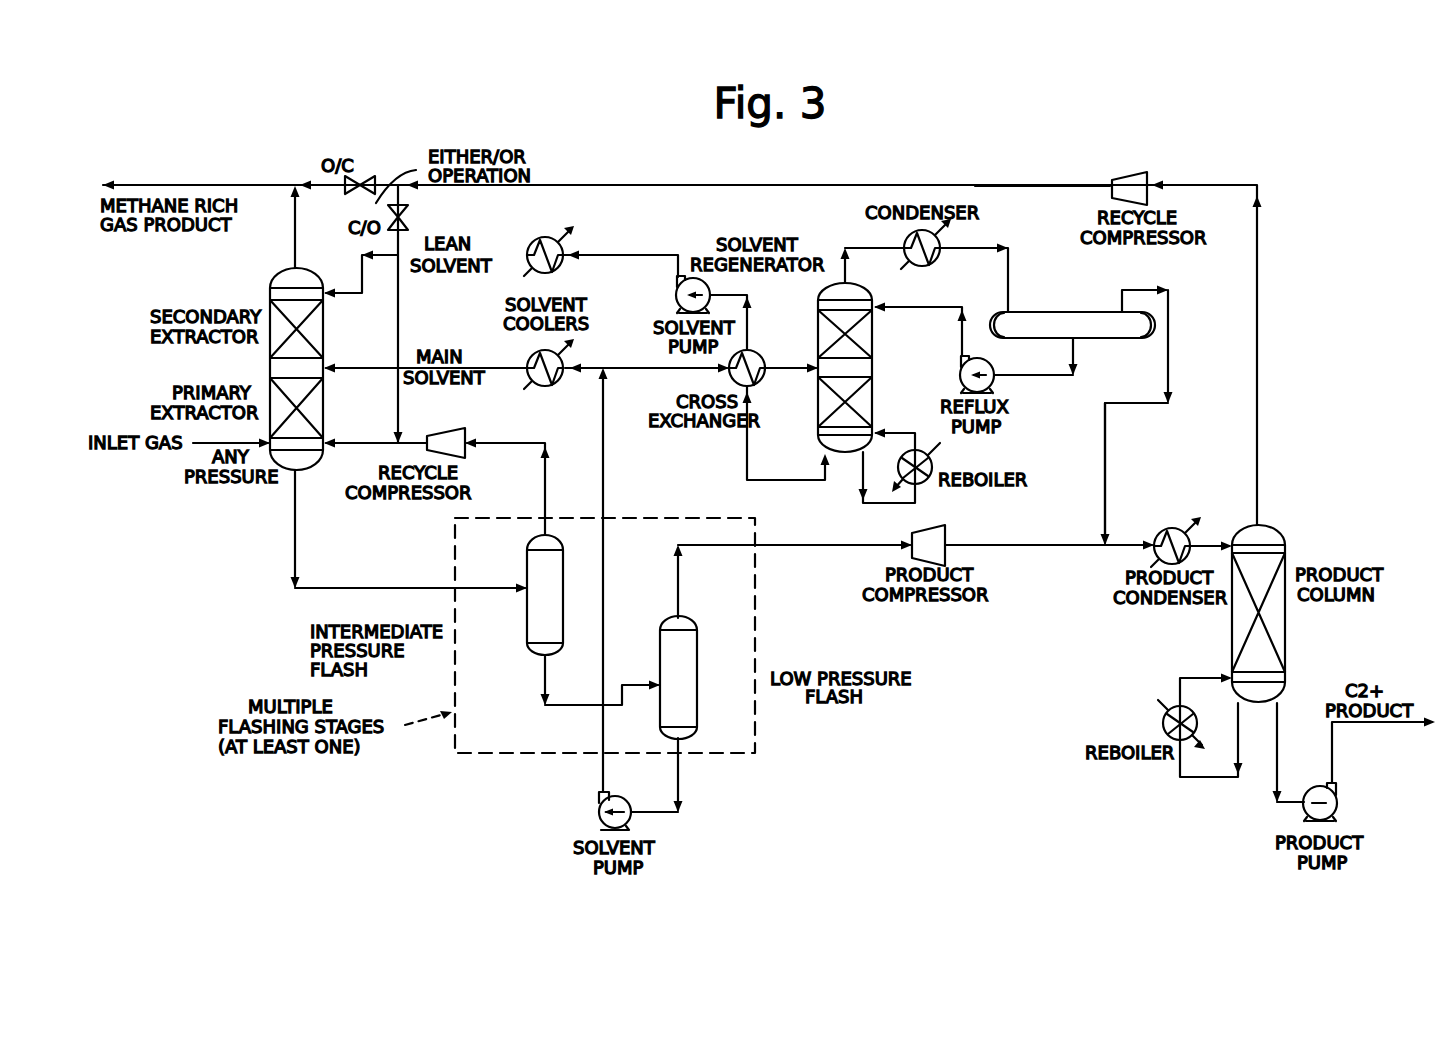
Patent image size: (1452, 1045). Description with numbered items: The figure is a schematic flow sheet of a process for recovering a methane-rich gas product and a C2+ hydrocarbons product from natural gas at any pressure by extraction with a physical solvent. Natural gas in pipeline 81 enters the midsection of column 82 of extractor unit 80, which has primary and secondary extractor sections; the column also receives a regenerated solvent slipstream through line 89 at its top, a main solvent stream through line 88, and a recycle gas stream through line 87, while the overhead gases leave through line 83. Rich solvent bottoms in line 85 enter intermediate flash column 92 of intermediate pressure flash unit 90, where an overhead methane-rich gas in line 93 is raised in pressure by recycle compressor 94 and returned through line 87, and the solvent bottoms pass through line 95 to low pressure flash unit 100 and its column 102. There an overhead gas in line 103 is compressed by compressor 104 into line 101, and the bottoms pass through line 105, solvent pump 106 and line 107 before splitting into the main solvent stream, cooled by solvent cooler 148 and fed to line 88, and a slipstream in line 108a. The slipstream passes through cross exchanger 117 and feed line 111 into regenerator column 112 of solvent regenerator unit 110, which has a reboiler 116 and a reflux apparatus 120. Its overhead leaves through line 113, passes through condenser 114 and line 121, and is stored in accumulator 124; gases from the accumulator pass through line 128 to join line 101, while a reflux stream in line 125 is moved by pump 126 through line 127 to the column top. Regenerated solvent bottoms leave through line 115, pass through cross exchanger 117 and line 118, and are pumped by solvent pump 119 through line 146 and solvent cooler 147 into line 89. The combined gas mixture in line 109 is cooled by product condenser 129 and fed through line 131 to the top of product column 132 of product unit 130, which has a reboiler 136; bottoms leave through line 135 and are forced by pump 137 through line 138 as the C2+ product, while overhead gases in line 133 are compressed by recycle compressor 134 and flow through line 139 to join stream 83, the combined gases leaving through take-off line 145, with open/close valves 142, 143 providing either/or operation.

The extractor unit 80 is at (274, 490).
The pipeline 81 is at (233, 441).
The column 82 is at (270, 370).
The line 83 is at (295, 238).
The line 85 is at (295, 556).
The line 87 is at (384, 441).
The line 88 is at (362, 368).
The line 89 is at (362, 282).
The intermediate pressure flash unit 90 is at (498, 642).
The intermediate flash column 92 is at (563, 596).
The line 93 is at (545, 472).
The recycle compressor 94 is at (427, 448).
The line 95 is at (592, 704).
The low pressure flash unit 100 is at (728, 711).
The line 101 is at (977, 545).
The column 102 is at (697, 640).
The line 103 is at (745, 546).
The compressor 104 is at (912, 536).
The line 105 is at (644, 812).
The solvent pump 106 is at (598, 810).
The line 107 is at (603, 548).
The line 108a is at (699, 373).
The line 109 is at (1122, 545).
The solvent regenerator unit 110 is at (818, 296).
The feed line 111 is at (790, 366).
The regenerator column 112 is at (872, 368).
The line 113 is at (846, 262).
The condenser 114 is at (906, 240).
The line 115 is at (825, 466).
The reboiler 116 is at (938, 460).
The cross exchanger 117 is at (763, 380).
The line 118 is at (747, 330).
The solvent pump 119 is at (677, 296).
The reflux apparatus 120 is at (1039, 286).
The line 121 is at (1008, 282).
The accumulator 124 is at (1098, 312).
The line 125 is at (1068, 352).
The pump 126 is at (962, 372).
The line 127 is at (908, 328).
The line 128 is at (1168, 353).
The product condenser 129 is at (1170, 528).
The product unit 130 is at (1298, 635).
The line 131 is at (1205, 546).
The product column 132 is at (1287, 657).
The line 133 is at (1257, 422).
The recycle compressor 134 is at (1153, 176).
The line 135 is at (1278, 748).
The reboiler 136 is at (1163, 711).
The pump 137 is at (1337, 796).
The line 138 is at (1360, 722).
The line 139 is at (975, 186).
The open/close valve 142 is at (366, 178).
The open/close valve 143 is at (387, 208).
The take-off line 145 is at (213, 186).
The line 146 is at (662, 255).
The solvent cooler 147 is at (560, 270).
The solvent cooler 148 is at (545, 351).